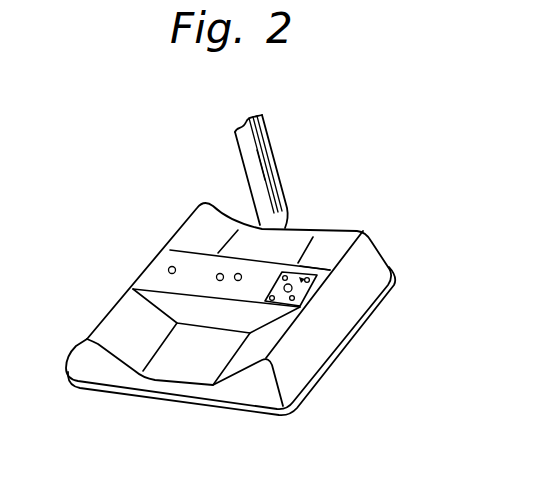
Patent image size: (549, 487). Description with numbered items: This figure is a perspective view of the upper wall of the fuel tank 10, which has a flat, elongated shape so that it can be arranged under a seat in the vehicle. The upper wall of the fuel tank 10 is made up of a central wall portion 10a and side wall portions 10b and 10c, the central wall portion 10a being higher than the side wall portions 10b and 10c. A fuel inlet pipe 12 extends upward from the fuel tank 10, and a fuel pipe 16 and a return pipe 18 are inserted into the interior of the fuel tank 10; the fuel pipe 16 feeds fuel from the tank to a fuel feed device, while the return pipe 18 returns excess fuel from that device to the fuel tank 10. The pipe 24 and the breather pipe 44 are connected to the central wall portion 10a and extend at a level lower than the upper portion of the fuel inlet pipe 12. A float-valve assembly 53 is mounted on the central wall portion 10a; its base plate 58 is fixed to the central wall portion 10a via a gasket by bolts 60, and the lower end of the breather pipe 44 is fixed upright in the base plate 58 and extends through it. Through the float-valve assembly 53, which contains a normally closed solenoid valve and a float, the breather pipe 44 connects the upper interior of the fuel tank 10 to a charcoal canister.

The fuel tank 10 is at (380, 247).
The central wall portion 10a is at (315, 285).
The side wall portion 10b is at (203, 372).
The side wall portion 10c is at (293, 241).
The fuel inlet pipe 12 is at (270, 170).
The fuel pipe 16 is at (219, 273).
The return pipe 18 is at (238, 272).
The pipe 24 is at (168, 270).
The breather pipe 44 is at (298, 298).
The float-valve assembly 53 is at (302, 280).
The base plate 58 is at (289, 293).
The bolts 60 is at (330, 270).